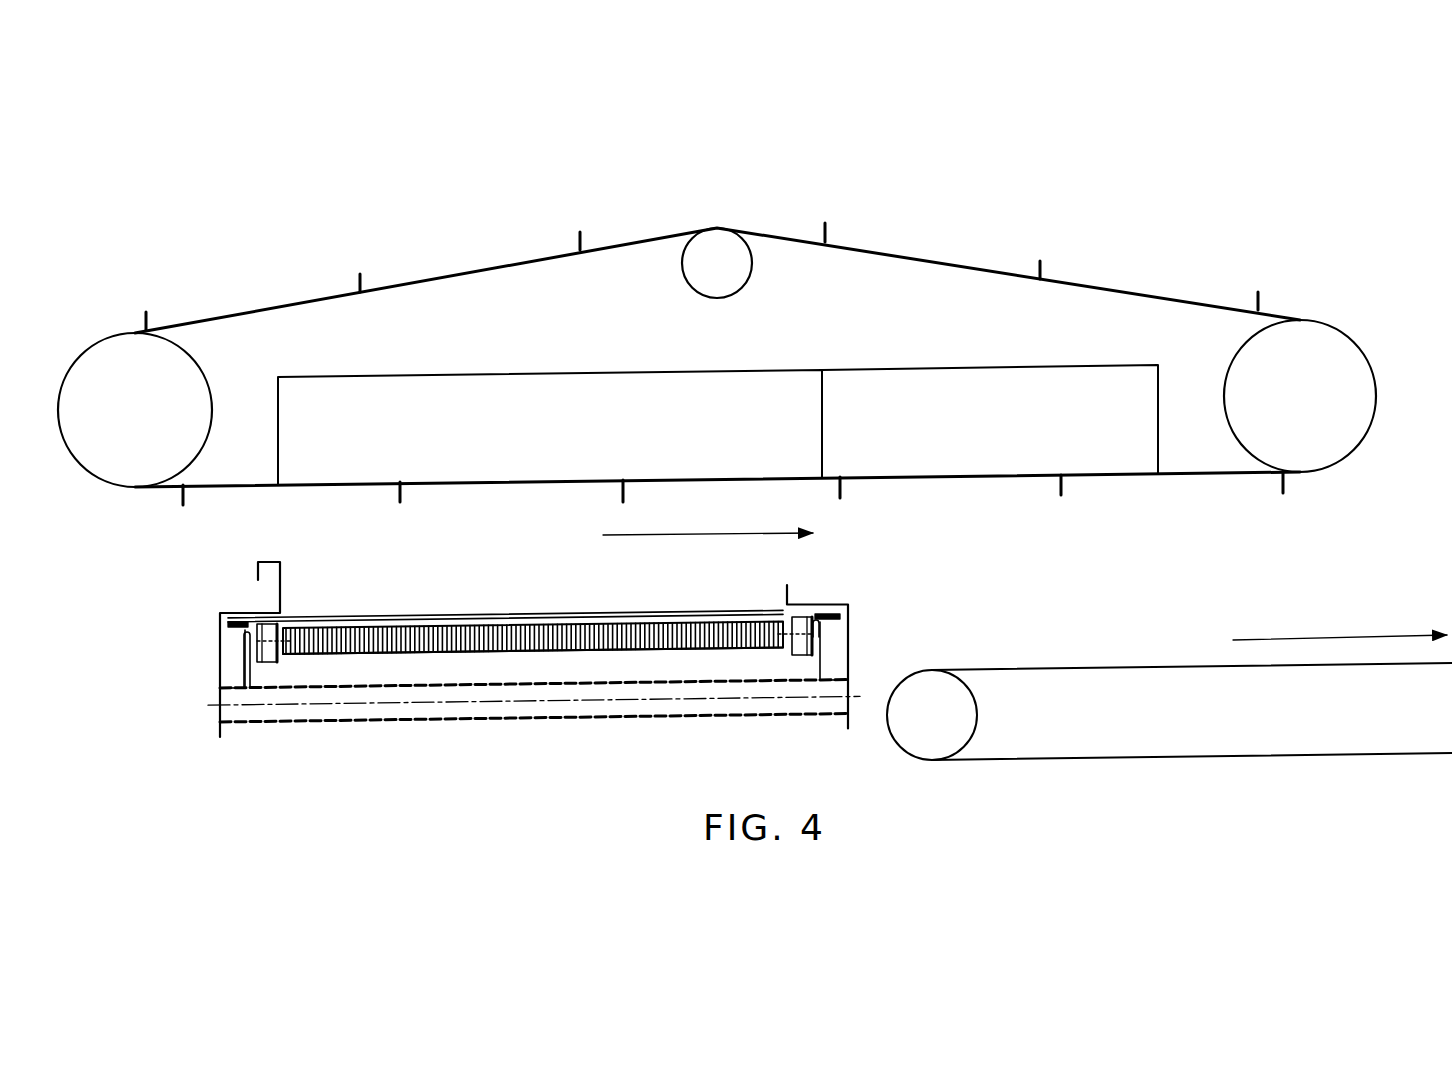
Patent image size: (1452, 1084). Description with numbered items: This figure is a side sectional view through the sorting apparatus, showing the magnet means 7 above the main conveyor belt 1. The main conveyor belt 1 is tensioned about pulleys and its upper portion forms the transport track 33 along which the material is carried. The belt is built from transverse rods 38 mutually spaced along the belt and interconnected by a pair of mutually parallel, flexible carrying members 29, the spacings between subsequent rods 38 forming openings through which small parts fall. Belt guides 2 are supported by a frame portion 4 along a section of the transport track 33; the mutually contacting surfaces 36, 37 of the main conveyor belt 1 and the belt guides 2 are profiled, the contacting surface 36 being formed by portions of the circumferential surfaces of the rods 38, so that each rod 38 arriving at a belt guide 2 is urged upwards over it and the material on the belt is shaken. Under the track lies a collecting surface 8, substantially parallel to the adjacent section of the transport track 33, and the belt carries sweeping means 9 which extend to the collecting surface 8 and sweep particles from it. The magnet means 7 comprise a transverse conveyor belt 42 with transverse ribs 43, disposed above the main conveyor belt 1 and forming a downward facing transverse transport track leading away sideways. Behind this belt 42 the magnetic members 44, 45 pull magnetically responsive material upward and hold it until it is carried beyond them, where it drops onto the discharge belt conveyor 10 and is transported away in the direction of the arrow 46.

The main conveyor belt 1 is at (387, 614).
The belt guide 2 is at (272, 663).
The frame portion 4 is at (547, 717).
The magnet means 7 is at (968, 255).
The collecting surface 8 is at (673, 653).
The sweeping means 9 is at (488, 638).
The discharge belt conveyor 10 is at (1184, 731).
The flexible carrying member 29 is at (236, 623).
The transport track 33 is at (570, 610).
The contacting surface of the main conveyor belt 36 is at (247, 643).
The contacting surface of the belt guide 37 is at (262, 660).
The transverse rod 38 is at (426, 617).
The transverse conveyor belt 42 is at (234, 488).
The transverse rib 43 is at (627, 493).
The magnetic member 44 is at (563, 441).
The magnetic member 45 is at (996, 434).
The arrow 46 is at (1305, 637).